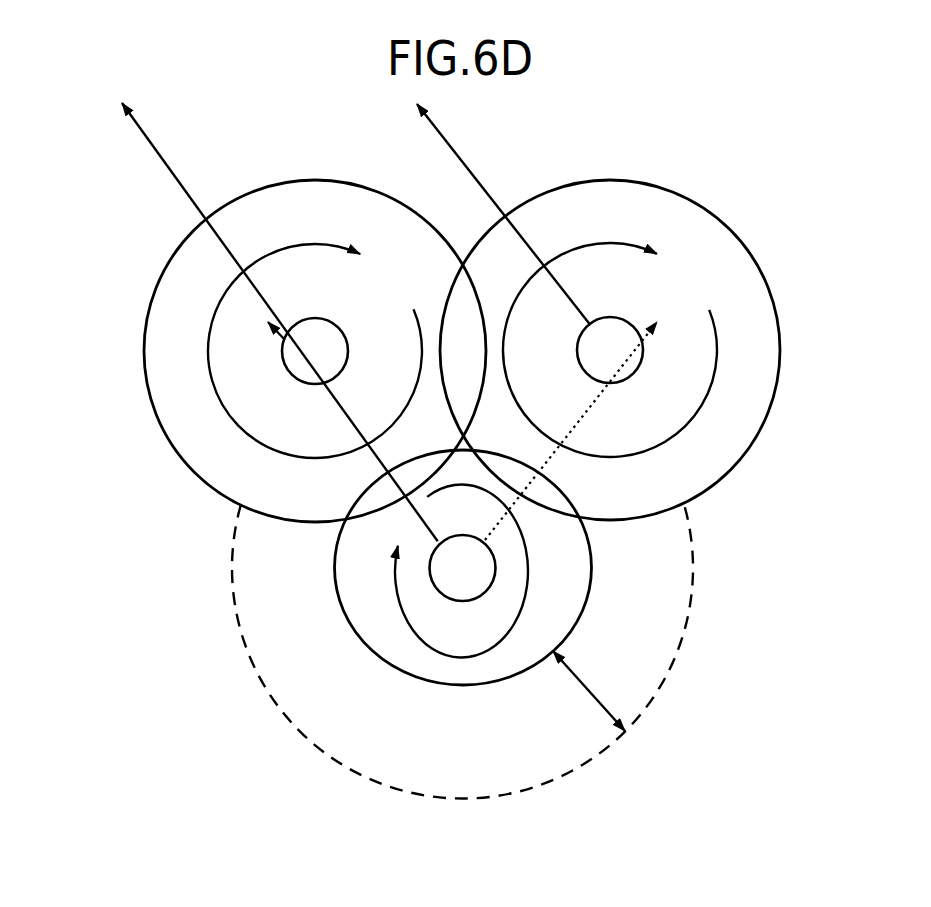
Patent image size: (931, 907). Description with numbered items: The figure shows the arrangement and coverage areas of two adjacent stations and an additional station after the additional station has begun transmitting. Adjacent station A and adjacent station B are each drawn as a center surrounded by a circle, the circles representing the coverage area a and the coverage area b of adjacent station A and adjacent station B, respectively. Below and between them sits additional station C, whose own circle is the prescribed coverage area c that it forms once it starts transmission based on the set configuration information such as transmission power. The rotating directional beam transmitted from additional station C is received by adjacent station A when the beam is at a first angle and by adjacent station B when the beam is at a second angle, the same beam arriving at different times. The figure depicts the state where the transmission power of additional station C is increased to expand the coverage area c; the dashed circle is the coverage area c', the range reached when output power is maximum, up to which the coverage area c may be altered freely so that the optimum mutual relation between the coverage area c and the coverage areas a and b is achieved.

The coverage area a is at (145, 335).
The coverage area b is at (779, 334).
The coverage area c is at (463, 594).
The coverage area c' is at (462, 669).
The adjacent station A is at (280, 322).
The adjacent station B is at (530, 243).
The additional station C is at (463, 568).